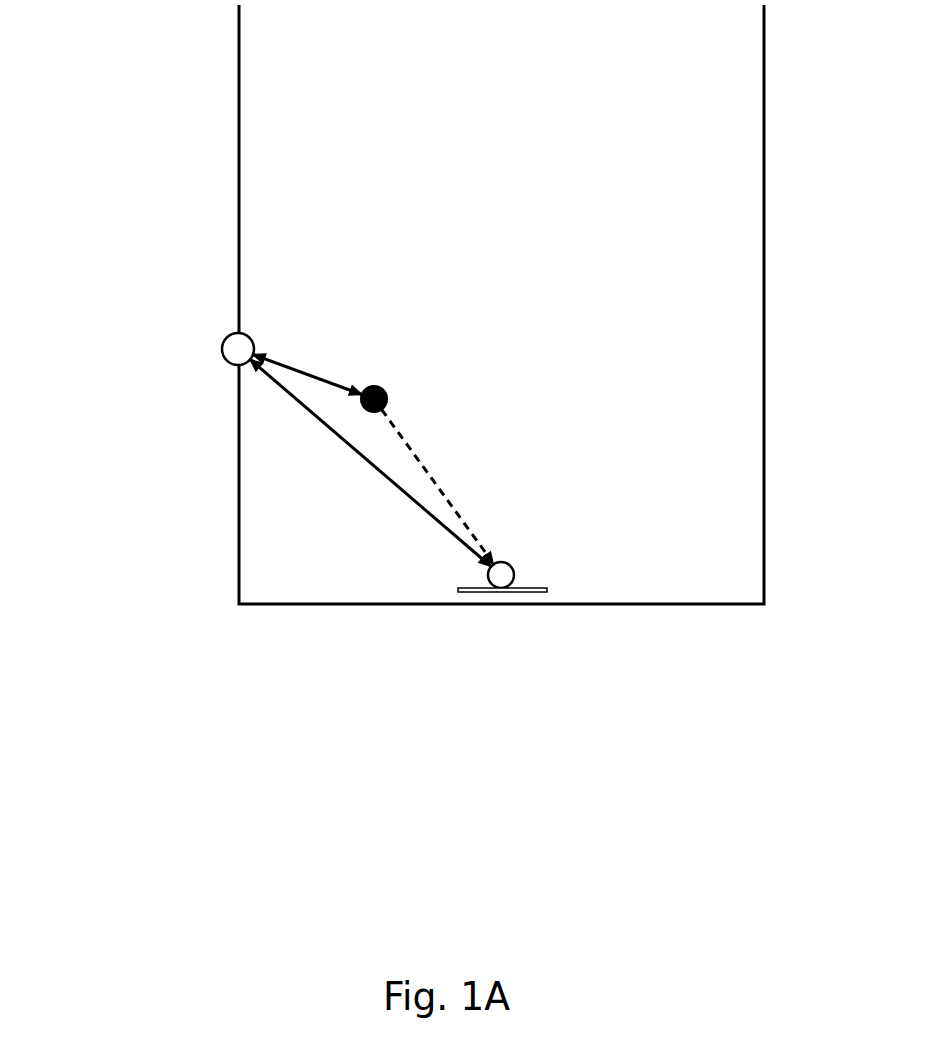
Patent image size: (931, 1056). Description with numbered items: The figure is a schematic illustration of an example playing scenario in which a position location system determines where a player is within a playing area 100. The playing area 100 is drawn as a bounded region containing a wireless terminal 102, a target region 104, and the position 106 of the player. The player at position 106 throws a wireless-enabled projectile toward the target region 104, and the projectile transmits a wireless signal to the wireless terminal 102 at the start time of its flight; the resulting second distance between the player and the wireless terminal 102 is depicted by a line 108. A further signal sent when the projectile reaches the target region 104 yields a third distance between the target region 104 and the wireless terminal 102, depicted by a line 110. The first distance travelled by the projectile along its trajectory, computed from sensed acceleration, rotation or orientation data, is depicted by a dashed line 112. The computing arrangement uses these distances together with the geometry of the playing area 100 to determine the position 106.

The playing area 100 is at (238, 33).
The wireless terminal 102 is at (232, 367).
The target region 104 is at (510, 592).
The position 106 is at (385, 390).
The line 108 is at (312, 368).
The line 110 is at (340, 443).
The dashed line 112 is at (428, 467).